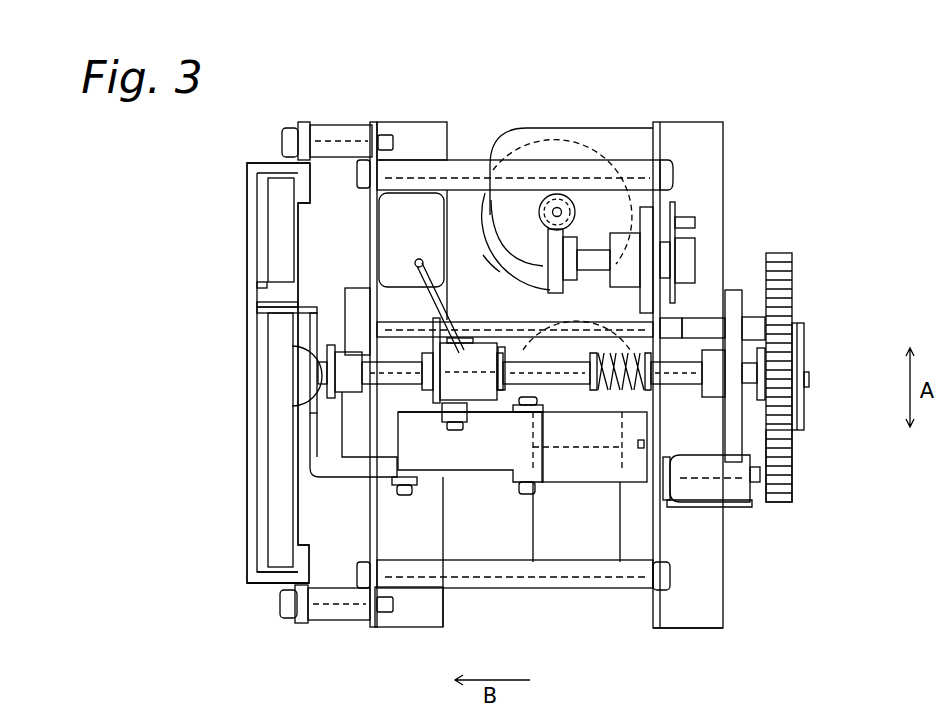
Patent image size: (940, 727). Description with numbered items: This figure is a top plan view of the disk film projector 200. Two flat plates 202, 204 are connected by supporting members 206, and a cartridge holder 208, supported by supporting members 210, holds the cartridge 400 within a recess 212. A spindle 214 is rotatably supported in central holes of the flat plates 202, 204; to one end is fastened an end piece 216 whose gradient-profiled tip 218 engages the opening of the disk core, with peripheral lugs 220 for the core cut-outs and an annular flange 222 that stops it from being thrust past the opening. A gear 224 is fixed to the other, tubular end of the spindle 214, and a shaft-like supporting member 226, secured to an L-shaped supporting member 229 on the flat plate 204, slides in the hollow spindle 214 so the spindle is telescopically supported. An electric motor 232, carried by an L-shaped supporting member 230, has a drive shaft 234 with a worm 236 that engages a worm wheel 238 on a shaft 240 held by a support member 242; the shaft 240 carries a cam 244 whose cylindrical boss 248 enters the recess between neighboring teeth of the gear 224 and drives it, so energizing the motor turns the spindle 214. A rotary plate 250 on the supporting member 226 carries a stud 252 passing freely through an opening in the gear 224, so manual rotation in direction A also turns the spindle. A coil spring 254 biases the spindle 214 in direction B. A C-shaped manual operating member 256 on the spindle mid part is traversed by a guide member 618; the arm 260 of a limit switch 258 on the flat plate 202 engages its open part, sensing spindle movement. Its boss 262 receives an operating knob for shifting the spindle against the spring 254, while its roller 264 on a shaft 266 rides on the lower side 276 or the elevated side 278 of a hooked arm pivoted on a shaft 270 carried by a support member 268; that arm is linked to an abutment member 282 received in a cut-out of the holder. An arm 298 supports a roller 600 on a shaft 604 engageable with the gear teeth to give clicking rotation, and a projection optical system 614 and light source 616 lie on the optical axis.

The disk film projector 200 is at (447, 82).
The flat plate 202 is at (370, 213).
The flat plate 204 is at (650, 615).
The supporting members 206 is at (470, 160).
The cartridge holder 208 is at (250, 575).
The supporting members 210 is at (326, 127).
The recess 212 is at (258, 527).
The spindle 214 is at (502, 322).
The end piece 216 is at (335, 350).
The tip 218 is at (310, 375).
The peripheral lugs 220 is at (313, 425).
The annular flange 222 is at (317, 330).
The gear 224 is at (738, 292).
The supporting member 226 is at (810, 379).
The L-shaped supporting member 229 is at (806, 416).
The L-shaped supporting member 230 is at (628, 128).
The electric motor 232 is at (480, 213).
The drive shaft 234 is at (540, 208).
The worm 236 is at (535, 200).
The worm wheel 238 is at (568, 283).
The shaft 240 is at (592, 250).
The support member 242 is at (652, 305).
The cam 244 is at (675, 205).
The cylindrical boss 248 is at (690, 218).
The rotary plate 250 is at (795, 262).
The stud 252 is at (745, 320).
The coil spring 254 is at (648, 395).
The manual operating member 256 is at (470, 343).
The limit switch 258 is at (422, 205).
The arm 260 is at (436, 306).
The boss 262 is at (475, 403).
The roller 264 is at (443, 412).
The shaft 266 is at (432, 480).
The support member 268 is at (578, 483).
The shaft 270 is at (536, 398).
The lower side 276 is at (455, 428).
The elevated side 278 is at (444, 410).
The abutment member 282 is at (303, 310).
The arm 298 is at (752, 507).
The cartridge 400 is at (265, 198).
The roller 600 is at (732, 487).
The shaft 604 is at (766, 470).
The projection optical system 614 is at (352, 290).
The light source 616 is at (527, 385).
The guide member 618 is at (486, 312).